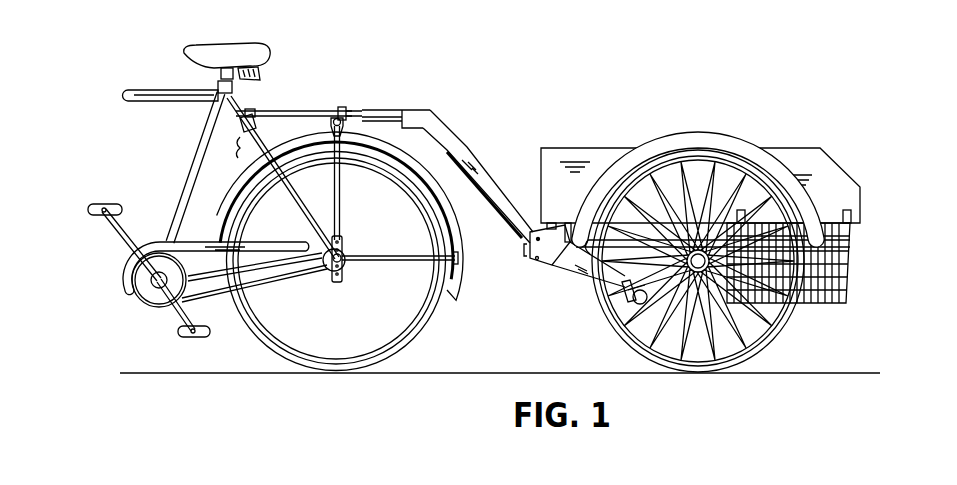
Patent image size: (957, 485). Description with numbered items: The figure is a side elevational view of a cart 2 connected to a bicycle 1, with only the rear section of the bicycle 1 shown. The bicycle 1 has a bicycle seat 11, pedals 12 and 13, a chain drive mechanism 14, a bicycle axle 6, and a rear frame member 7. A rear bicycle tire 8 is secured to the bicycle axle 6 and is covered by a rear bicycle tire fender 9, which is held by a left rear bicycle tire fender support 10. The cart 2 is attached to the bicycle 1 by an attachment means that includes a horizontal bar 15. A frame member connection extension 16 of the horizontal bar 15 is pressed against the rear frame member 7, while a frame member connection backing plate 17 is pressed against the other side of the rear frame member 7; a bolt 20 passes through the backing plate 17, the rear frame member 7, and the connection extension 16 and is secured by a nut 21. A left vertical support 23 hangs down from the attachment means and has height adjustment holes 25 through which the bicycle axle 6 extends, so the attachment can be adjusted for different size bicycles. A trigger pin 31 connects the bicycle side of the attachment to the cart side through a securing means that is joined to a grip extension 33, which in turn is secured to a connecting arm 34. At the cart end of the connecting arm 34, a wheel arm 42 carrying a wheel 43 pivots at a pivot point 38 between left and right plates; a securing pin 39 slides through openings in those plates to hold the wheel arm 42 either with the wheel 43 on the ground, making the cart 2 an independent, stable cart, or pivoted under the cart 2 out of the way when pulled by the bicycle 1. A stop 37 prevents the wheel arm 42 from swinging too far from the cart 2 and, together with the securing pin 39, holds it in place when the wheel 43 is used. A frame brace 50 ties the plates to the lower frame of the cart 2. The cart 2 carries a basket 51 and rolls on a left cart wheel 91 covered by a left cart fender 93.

The bicycle 1 is at (141, 85).
The cart 2 is at (620, 140).
The bicycle axle 6 is at (347, 245).
The rear frame member 7 is at (289, 191).
The rear bicycle tire 8 is at (420, 333).
The rear bicycle tire fender 9 is at (466, 290).
The left rear bicycle tire fender support 10 is at (386, 252).
The bicycle seat 11 is at (186, 48).
The pedal 12 is at (121, 207).
The pedal 13 is at (183, 336).
The chain drive mechanism 14 is at (278, 288).
The horizontal bar 15 is at (293, 110).
The frame member connection extension 16 is at (247, 125).
The frame member connection backing plate 17 is at (230, 123).
The bolt 20 is at (237, 142).
The nut 21 is at (245, 117).
The left vertical support 23 is at (342, 185).
The height adjustment holes 25 is at (344, 281).
The trigger pin 31 is at (346, 109).
The grip extension 33 is at (392, 108).
The connecting arm 34 is at (464, 138).
The stop 37 is at (527, 250).
The pivot point 38 is at (538, 239).
The securing pin 39 is at (538, 264).
The wheel arm 42 is at (572, 270).
The wheel 43 is at (618, 308).
The frame brace 50 is at (605, 206).
The basket 51 is at (848, 272).
The left cart wheel 91 is at (784, 336).
The left cart fender 93 is at (702, 132).